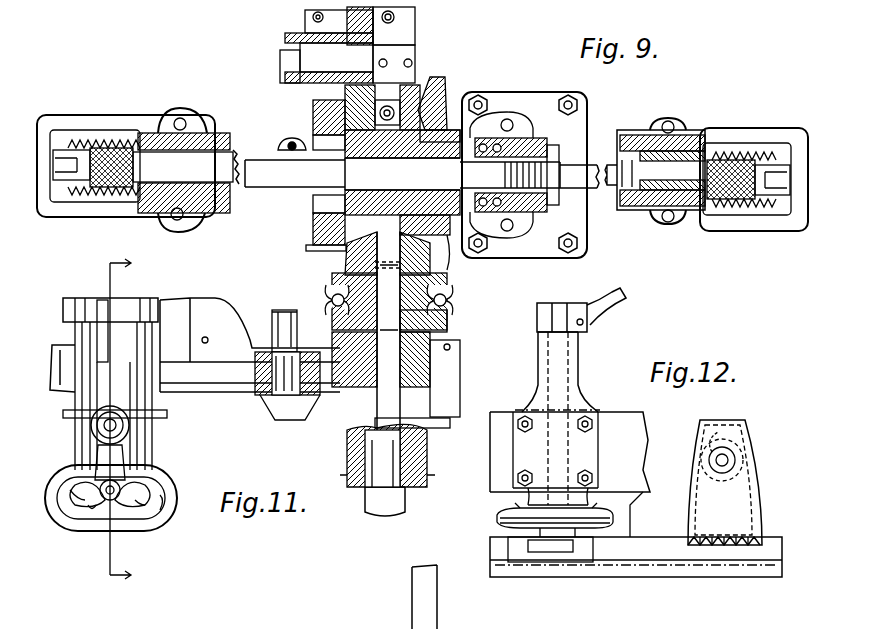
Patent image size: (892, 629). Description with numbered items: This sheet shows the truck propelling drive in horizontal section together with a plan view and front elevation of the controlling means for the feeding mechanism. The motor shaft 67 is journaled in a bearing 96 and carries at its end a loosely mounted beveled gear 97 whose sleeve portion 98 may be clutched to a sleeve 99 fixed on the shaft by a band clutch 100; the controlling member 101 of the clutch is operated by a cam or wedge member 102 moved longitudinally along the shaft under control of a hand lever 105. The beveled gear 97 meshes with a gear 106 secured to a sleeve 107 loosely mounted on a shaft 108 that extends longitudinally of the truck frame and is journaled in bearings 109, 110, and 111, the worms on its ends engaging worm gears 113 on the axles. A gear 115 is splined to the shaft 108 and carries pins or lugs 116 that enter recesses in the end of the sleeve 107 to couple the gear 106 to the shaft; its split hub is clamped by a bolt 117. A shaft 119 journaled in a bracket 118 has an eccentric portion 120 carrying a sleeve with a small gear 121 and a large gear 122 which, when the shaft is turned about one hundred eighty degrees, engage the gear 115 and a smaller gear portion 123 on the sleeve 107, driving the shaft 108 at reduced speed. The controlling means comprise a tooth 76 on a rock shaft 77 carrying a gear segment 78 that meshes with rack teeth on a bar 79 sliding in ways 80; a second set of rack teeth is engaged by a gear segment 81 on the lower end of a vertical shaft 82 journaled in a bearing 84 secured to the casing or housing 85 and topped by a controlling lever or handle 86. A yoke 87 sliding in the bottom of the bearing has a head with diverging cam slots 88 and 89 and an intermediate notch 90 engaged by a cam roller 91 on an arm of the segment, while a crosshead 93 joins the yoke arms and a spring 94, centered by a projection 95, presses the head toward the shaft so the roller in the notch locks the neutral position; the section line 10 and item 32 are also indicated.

In FIG. 11, the section line 10 is at (115, 420).
In FIG. 11, the lug 32 is at (125, 470).
In FIG. 9, the shaft 67 is at (380, 500).
In FIG. 11, the tooth 76 is at (280, 340).
In FIG. 12, the tooth 76 is at (728, 445).
In FIG. 11, the rock shaft 77 is at (285, 312).
In FIG. 12, the rock shaft 77 is at (735, 448).
In FIG. 11, the gear segment 78 is at (315, 400).
In FIG. 12, the gear segment 78 is at (738, 490).
In FIG. 11, the bar 79 is at (222, 380).
In FIG. 12, the bar 79 is at (722, 548).
In FIG. 11, the ways 80 is at (208, 396).
In FIG. 12, the ways 80 is at (665, 578).
In FIG. 11, the gear segment 81 is at (82, 410).
In FIG. 12, the gear segment 81 is at (530, 555).
In FIG. 11, the vertical shaft 82 is at (75, 450).
In FIG. 12, the vertical shaft 82 is at (548, 373).
In FIG. 11, the bearing 84 is at (75, 432).
In FIG. 12, the bearing 84 is at (582, 408).
In FIG. 11, the casing or housing 85 is at (150, 418).
In FIG. 12, the casing or housing 85 is at (630, 440).
In FIG. 12, the controlling lever or handle 86 is at (598, 303).
In FIG. 11, the yoke 87 is at (160, 495).
In FIG. 12, the yoke 87 is at (497, 518).
In FIG. 11, the cam slot 88 is at (160, 525).
In FIG. 11, the cam slot 89 is at (85, 500).
In FIG. 11, the notch 90 is at (90, 510).
In FIG. 11, the cam roller 91 is at (145, 505).
In FIG. 11, the crosshead 93 is at (128, 302).
In FIG. 11, the spring 94 is at (60, 345).
In FIG. 11, the projection 95 is at (100, 300).
In FIG. 9, the bearing 96 is at (448, 318).
In FIG. 9, the beveled gear 97 is at (345, 262).
In FIG. 9, the sleeve portion 98 is at (448, 292).
In FIG. 9, the sleeve 99 is at (376, 420).
In FIG. 9, the band clutch 100 is at (332, 360).
In FIG. 9, the controlling member 101 is at (445, 385).
In FIG. 9, the cam or wedge member 102 is at (420, 468).
In FIG. 9, the hand lever 105 is at (430, 618).
In FIG. 9, the gear 106 is at (448, 130).
In FIG. 9, the sleeve 107 is at (450, 268).
In FIG. 9, the shaft 108 is at (232, 165).
In FIG. 9, the bearing 109 is at (165, 135).
In FIG. 9, the bearing 110 is at (533, 112).
In FIG. 9, the bearing 111 is at (688, 150).
In FIG. 9, the worm gear 113 is at (402, 160).
In FIG. 9, the gear 115 is at (306, 248).
In FIG. 9, the pins or lugs 116 is at (313, 128).
In FIG. 9, the bolt 117 is at (278, 145).
In FIG. 9, the bracket 118 is at (400, 40).
In FIG. 9, the shaft 119 is at (285, 62).
In FIG. 9, the eccentric portion 120 is at (295, 40).
In FIG. 9, the small gear 121 is at (312, 22).
In FIG. 9, the large gear 122 is at (400, 14).
In FIG. 9, the gear portion 123 is at (395, 108).